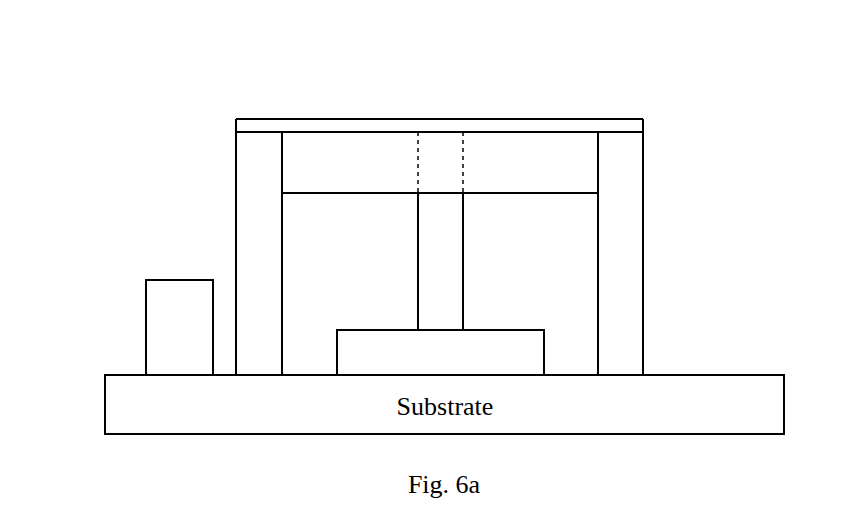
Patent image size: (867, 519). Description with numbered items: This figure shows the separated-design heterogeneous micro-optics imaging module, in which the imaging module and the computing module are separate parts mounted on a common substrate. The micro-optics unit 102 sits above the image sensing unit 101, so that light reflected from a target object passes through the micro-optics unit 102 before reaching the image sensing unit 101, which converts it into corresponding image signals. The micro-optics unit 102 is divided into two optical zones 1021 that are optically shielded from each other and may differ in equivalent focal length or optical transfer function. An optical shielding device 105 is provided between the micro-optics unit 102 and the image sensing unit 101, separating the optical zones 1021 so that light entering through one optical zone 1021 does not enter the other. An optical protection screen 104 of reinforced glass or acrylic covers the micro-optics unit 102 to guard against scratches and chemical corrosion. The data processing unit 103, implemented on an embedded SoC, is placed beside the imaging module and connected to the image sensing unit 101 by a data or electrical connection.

The image sensing unit 101 is at (545, 353).
The micro-optics unit 102 is at (600, 160).
The optical zone 1021 is at (342, 165).
The data processing unit 103 is at (143, 327).
The optical protection screen 104 is at (440, 117).
The optical shielding device 105 is at (418, 262).